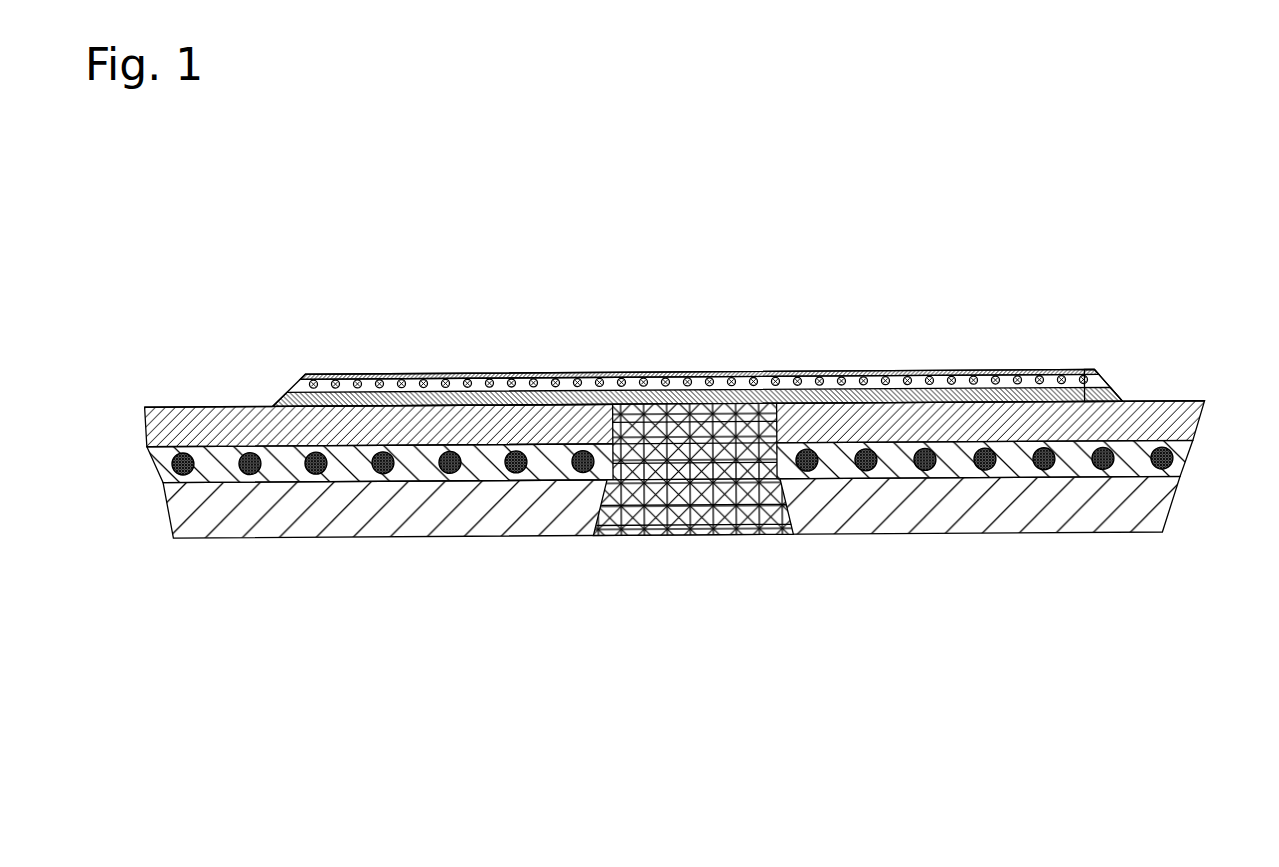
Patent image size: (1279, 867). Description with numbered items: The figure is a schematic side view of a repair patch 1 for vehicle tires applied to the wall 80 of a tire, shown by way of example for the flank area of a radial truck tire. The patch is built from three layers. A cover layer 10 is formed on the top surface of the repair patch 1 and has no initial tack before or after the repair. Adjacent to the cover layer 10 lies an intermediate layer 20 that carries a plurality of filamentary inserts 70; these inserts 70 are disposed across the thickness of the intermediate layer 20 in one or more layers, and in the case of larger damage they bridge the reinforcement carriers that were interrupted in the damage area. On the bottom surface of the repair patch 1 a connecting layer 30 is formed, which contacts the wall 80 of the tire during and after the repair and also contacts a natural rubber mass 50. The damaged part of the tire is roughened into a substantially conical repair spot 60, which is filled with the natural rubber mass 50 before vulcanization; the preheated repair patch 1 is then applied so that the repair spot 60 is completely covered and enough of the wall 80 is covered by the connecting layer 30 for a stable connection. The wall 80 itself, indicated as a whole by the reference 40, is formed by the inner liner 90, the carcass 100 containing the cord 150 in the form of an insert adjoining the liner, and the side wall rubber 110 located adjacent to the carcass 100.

The repair patch 1 is at (713, 329).
The cover layer 10 is at (552, 372).
The intermediate layer 20 is at (303, 385).
The connecting layer 30 is at (1113, 390).
The substrate assembly 40 is at (687, 495).
The natural rubber mass 50 is at (698, 513).
The repair spot 60 is at (773, 428).
The filamentary inserts 70 is at (400, 380).
The wall 80 is at (188, 407).
The inner liner 90 is at (1163, 417).
The carcass 100 is at (1182, 448).
The side wall rubber 110 is at (1130, 503).
The cord 150 is at (175, 470).